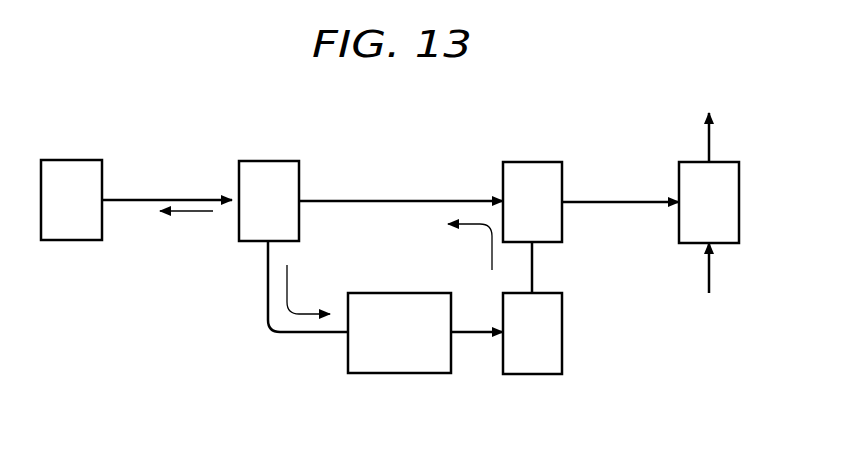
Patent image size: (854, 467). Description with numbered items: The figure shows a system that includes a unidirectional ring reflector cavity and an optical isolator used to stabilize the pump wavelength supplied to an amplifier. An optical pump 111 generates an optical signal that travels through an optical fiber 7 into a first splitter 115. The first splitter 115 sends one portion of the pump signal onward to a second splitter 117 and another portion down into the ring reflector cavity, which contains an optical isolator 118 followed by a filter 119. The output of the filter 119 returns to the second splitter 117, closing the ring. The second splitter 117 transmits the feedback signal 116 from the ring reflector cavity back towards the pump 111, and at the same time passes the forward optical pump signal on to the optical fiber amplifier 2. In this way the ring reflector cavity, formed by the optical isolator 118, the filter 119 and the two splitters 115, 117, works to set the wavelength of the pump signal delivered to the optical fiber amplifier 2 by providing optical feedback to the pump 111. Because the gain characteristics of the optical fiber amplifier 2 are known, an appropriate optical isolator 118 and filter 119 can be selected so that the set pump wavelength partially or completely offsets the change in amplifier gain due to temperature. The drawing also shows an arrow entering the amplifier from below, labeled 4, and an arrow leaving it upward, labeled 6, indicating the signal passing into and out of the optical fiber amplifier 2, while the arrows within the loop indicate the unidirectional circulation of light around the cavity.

The optical pump 111 is at (72, 158).
The optical fiber 7 is at (166, 198).
The feedback signal 116 is at (190, 213).
The first splitter 115 is at (269, 159).
The second splitter 117 is at (531, 160).
The optical isolator 118 is at (400, 375).
The filter 119 is at (531, 376).
The optical fiber amplifier 2 is at (739, 205).
The output signal 6 is at (711, 143).
The input signal 4 is at (710, 278).